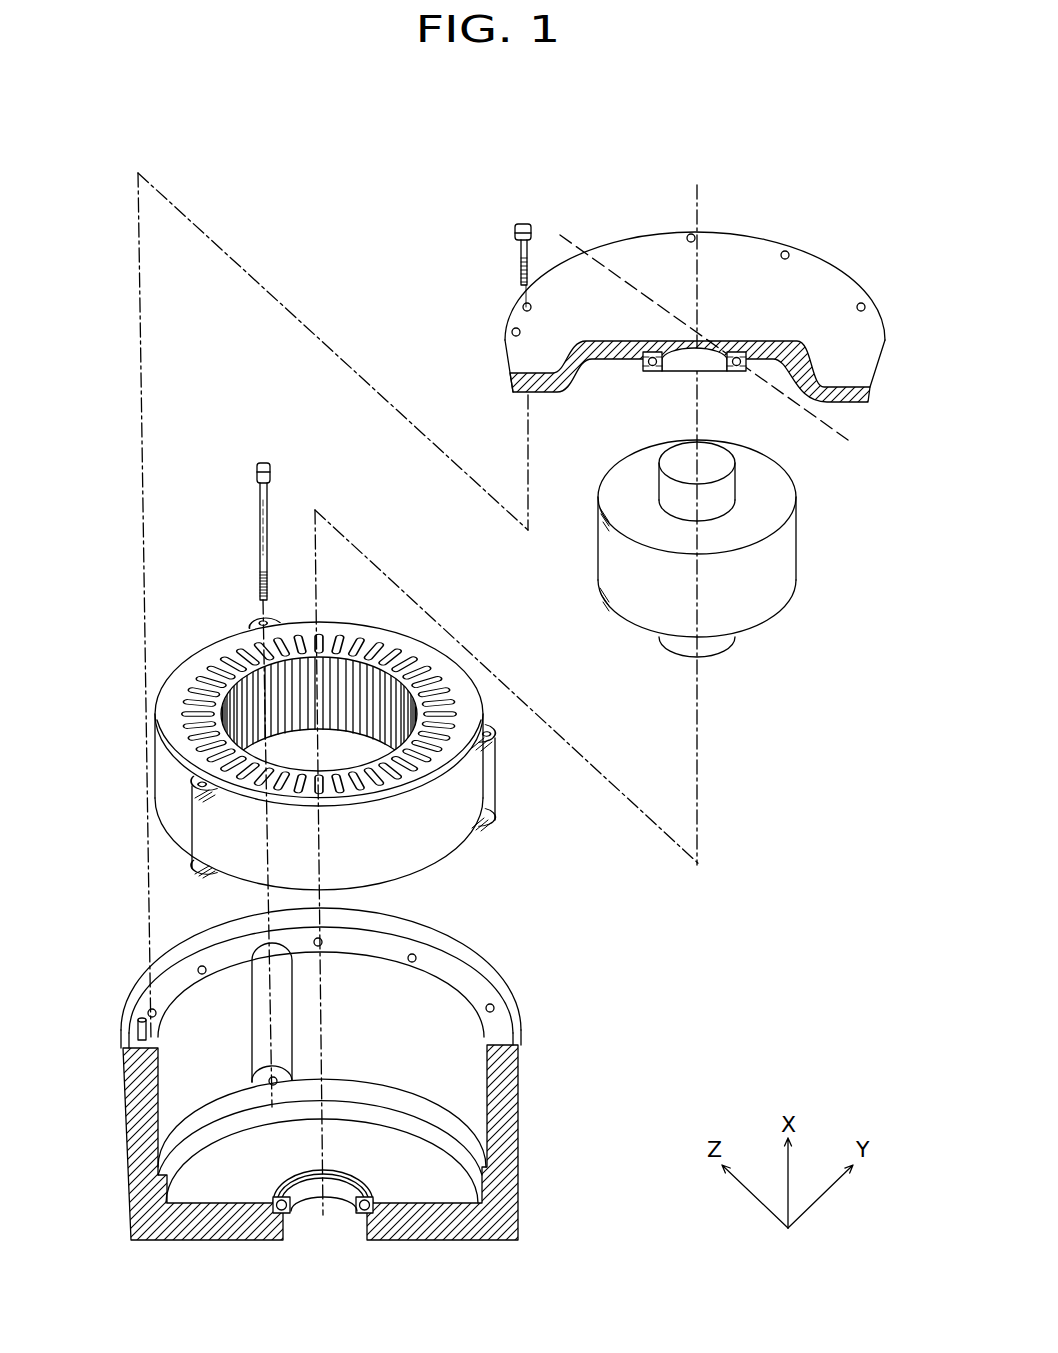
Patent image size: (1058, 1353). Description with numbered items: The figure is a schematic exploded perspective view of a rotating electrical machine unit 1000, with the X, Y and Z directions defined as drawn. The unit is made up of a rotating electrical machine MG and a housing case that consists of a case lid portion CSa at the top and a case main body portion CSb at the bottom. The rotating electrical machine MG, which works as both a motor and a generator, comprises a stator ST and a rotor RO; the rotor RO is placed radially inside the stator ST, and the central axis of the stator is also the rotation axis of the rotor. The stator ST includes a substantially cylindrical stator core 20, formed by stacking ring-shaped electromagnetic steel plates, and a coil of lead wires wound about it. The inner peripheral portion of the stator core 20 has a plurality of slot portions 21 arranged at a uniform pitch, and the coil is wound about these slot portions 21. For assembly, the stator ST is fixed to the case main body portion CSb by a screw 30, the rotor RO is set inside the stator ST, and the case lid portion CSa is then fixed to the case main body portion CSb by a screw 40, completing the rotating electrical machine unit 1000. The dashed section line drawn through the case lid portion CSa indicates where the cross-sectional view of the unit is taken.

The rotating electrical machine unit 1000 is at (367, 108).
The screw 40 is at (514, 226).
The screw 30 is at (260, 563).
The slot portions 21 is at (452, 699).
The stator core 20 is at (452, 854).
The case lid portion CSa is at (738, 236).
The case main body portion CSb is at (504, 973).
The rotor RO is at (577, 575).
The stator ST is at (459, 652).
The rotating electrical machine MG is at (576, 612).